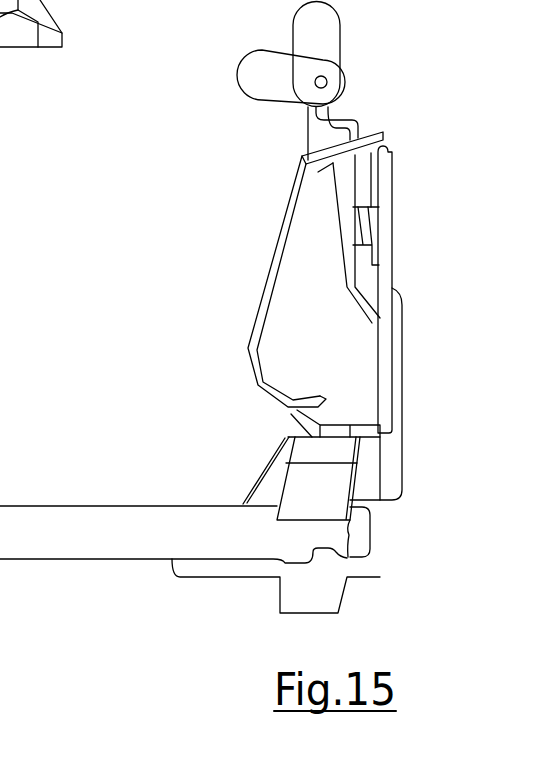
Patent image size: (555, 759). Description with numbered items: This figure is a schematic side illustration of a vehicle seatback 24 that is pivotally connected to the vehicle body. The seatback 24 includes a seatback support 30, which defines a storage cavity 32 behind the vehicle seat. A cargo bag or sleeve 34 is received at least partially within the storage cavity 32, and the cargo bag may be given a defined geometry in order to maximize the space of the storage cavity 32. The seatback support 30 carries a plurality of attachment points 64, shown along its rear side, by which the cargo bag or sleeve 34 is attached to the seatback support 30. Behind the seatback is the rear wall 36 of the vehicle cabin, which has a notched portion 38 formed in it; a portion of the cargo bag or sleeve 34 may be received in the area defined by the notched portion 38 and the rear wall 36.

The seatback 24 is at (274, 234).
The seatback support 30 is at (296, 185).
The storage cavity 32 is at (275, 358).
The cargo bag or sleeve 34 is at (308, 282).
The rear wall 36 is at (338, 383).
The notched portion 38 is at (373, 324).
The attachment points 64 is at (346, 167).